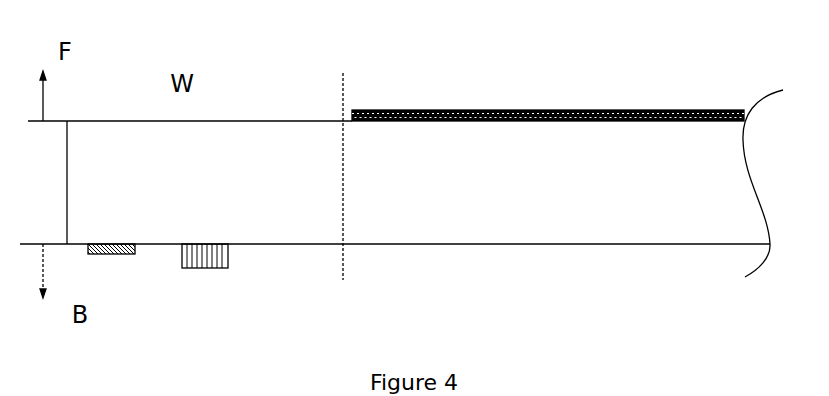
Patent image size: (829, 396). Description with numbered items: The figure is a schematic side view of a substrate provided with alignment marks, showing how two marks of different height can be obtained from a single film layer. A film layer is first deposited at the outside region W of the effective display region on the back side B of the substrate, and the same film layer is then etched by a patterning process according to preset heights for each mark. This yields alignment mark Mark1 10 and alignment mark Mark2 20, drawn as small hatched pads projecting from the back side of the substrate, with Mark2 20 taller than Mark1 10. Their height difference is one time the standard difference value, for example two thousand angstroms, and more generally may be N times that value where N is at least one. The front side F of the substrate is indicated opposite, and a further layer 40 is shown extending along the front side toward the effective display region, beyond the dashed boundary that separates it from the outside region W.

The alignment mark Mark1 10 is at (108, 254).
The alignment mark Mark2 20 is at (207, 268).
The upper layer / strip 40 is at (228, 121).